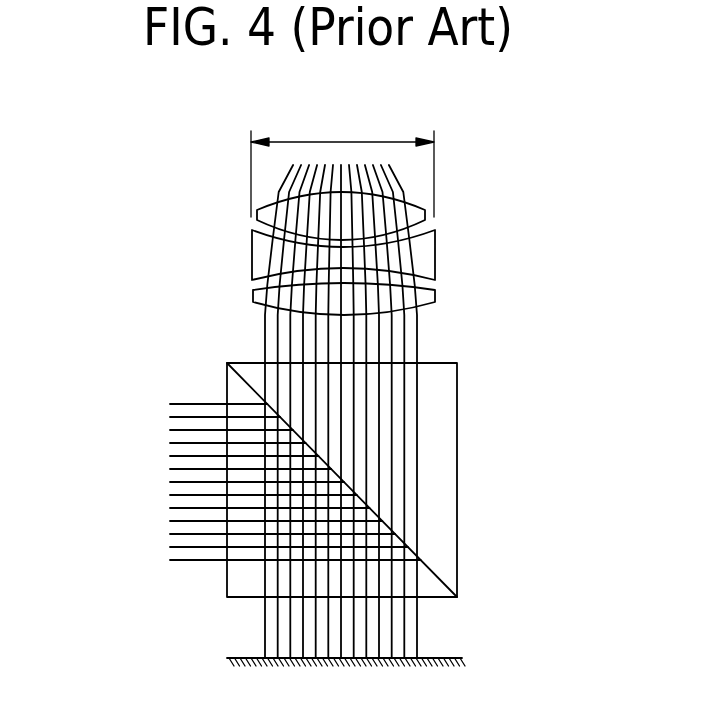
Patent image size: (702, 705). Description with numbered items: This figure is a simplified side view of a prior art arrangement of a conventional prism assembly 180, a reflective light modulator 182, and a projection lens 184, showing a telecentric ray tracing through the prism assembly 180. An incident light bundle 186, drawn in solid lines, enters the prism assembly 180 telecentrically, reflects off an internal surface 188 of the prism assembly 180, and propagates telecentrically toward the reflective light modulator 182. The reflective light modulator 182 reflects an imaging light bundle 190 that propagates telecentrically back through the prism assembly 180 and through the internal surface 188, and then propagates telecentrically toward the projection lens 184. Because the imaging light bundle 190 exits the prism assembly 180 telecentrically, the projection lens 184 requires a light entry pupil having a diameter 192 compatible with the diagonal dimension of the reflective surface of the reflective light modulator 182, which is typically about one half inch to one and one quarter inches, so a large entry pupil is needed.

The prism assembly 180 is at (440, 410).
The reflective light modulator 182 is at (445, 657).
The projection lens 184 is at (487, 244).
The incident light bundle 186 is at (148, 502).
The internal surface 188 is at (432, 568).
The imaging light bundle 190 is at (238, 335).
The diameter 192 is at (337, 147).